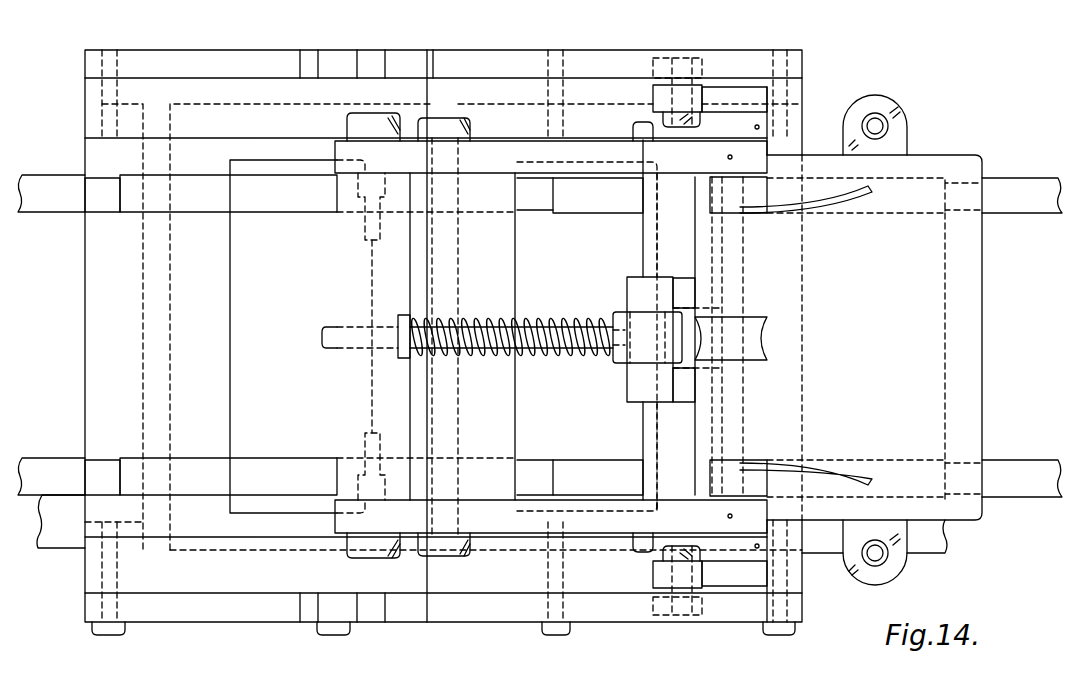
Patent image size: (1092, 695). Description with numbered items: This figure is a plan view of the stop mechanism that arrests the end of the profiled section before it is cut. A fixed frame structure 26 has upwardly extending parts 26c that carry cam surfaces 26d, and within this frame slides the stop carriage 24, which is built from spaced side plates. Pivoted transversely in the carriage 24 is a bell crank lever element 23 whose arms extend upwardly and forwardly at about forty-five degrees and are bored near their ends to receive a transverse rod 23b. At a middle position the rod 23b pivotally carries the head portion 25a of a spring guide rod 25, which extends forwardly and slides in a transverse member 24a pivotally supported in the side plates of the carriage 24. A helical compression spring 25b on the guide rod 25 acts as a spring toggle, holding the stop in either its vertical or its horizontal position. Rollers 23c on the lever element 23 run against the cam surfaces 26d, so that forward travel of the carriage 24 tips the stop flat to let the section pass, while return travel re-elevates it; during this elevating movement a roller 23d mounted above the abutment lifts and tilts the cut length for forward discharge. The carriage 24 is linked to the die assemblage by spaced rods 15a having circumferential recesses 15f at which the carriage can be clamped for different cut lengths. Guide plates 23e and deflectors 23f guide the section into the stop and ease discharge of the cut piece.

The fixed frame structure 26 is at (483, 62).
The upwardly extending parts 26c is at (598, 612).
The cam surfaces 26d is at (700, 68).
The rollers 23c is at (658, 62).
The stop carriage 24 is at (493, 143).
The transverse member 24a is at (345, 408).
The rods 15a is at (48, 222).
The circumferential recesses 15f is at (108, 212).
The guide plates 23e is at (975, 162).
The deflectors 23f is at (848, 205).
The bell crank lever element 23 is at (738, 99).
The transverse rod 23b is at (670, 388).
The roller 23d is at (748, 410).
The spring guide rod 25 is at (588, 325).
The helical compression spring 25b is at (560, 318).
The head portion 25a is at (655, 320).